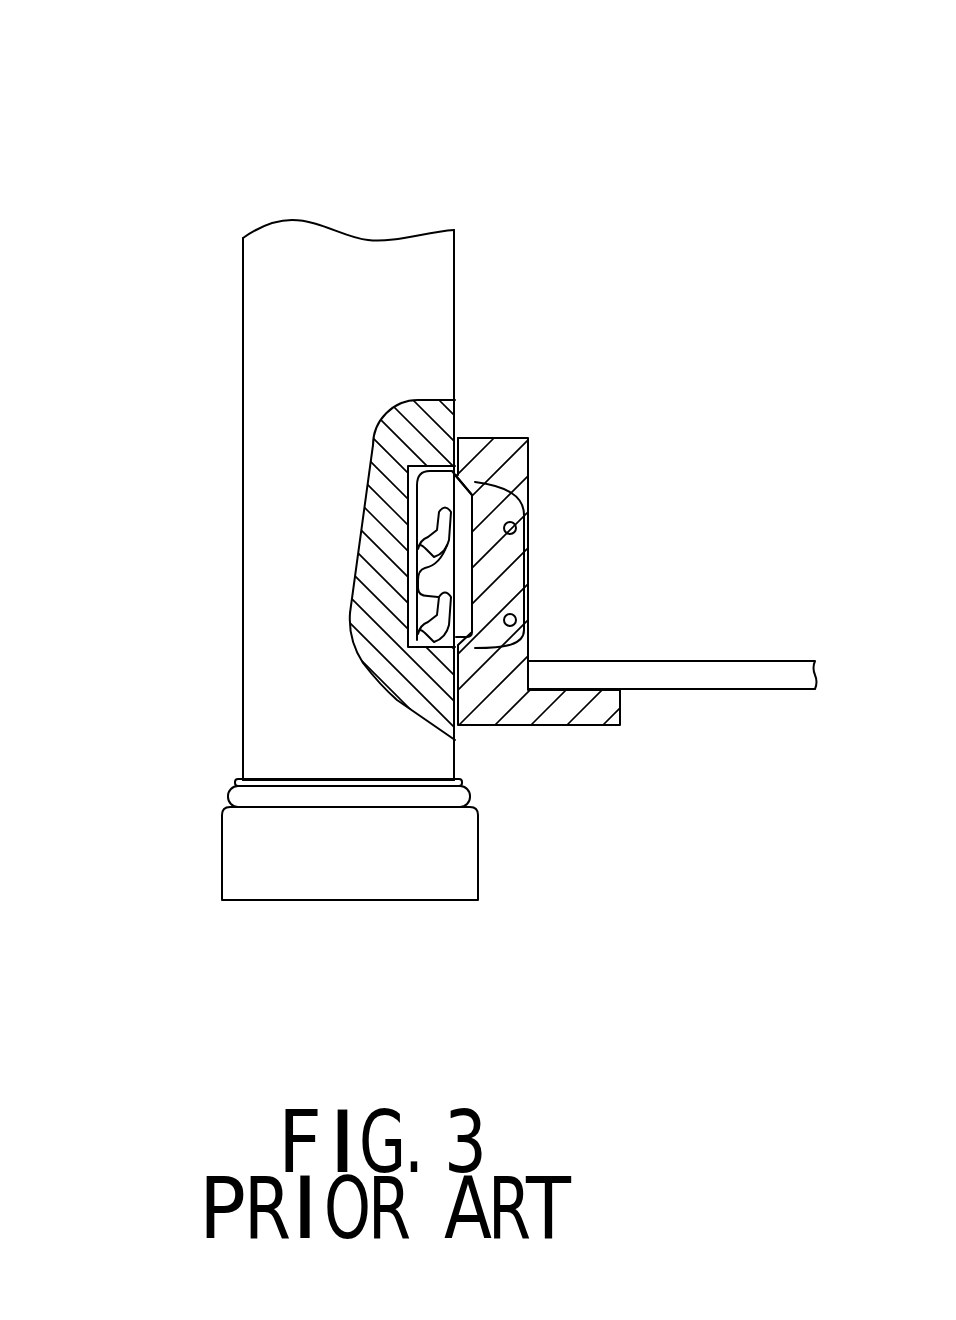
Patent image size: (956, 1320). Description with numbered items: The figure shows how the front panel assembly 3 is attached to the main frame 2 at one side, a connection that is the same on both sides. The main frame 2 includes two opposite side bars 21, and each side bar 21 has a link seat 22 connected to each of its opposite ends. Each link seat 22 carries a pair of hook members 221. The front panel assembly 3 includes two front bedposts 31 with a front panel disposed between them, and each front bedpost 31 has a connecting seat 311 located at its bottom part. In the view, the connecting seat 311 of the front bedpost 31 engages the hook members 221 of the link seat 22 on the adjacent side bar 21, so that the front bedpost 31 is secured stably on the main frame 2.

The main frame 2 is at (752, 640).
The side bar 21 is at (498, 452).
The link seat 22 is at (410, 497).
The hook member 221 is at (415, 538).
The front panel assembly 3 is at (270, 210).
The front bedpost 31 is at (391, 257).
The connecting seat 311 is at (427, 464).